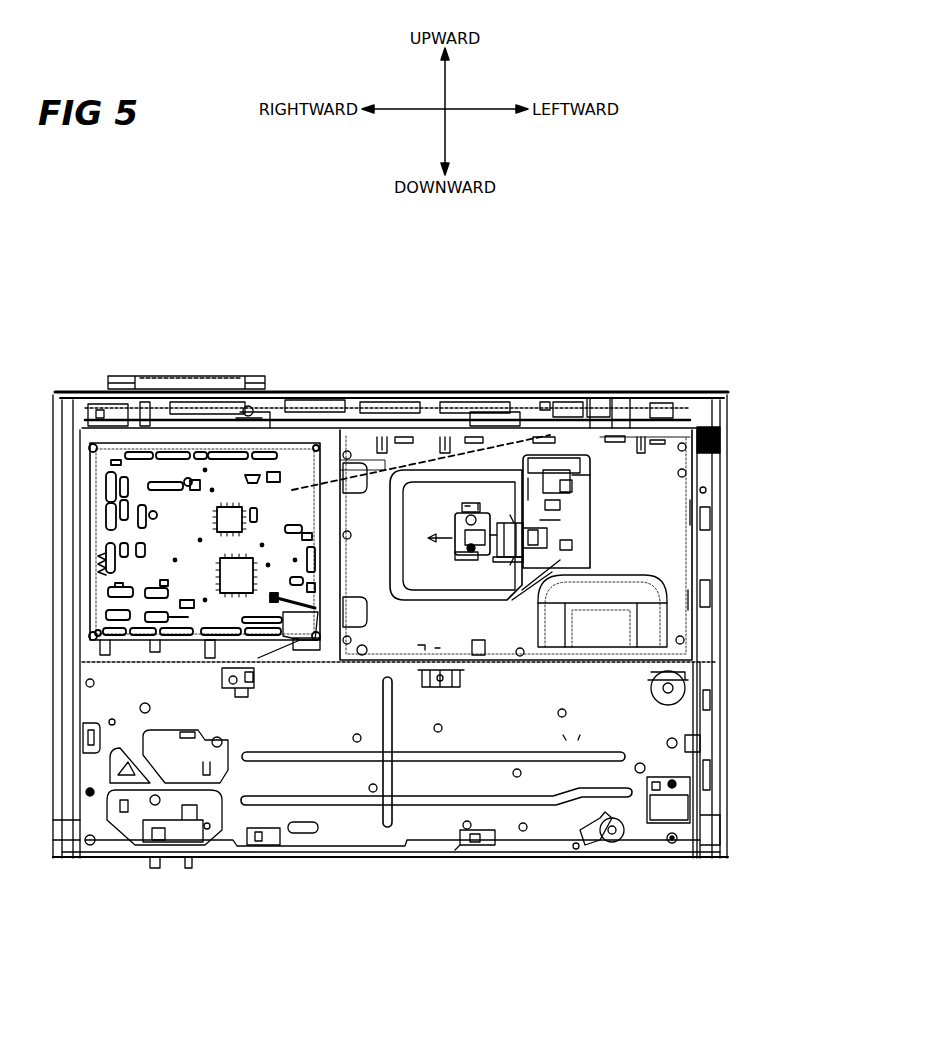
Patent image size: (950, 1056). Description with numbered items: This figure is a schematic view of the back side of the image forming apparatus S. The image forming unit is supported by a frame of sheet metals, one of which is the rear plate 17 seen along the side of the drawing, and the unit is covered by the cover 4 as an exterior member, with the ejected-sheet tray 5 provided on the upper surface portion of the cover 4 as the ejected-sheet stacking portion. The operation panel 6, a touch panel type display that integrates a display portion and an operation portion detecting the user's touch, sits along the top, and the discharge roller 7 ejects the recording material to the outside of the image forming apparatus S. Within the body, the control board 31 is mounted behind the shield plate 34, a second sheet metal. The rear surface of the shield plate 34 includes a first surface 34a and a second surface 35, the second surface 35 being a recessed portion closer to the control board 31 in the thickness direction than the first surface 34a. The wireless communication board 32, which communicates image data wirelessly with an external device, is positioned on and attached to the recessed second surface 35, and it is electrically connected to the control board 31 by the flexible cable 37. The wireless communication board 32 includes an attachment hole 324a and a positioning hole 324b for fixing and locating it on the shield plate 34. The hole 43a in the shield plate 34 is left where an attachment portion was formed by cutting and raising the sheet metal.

The cover 4 is at (598, 395).
The ejected-sheet tray 5 is at (375, 470).
The operation panel 6 is at (157, 372).
The discharge roller 7 is at (270, 428).
The rear plate 17 is at (674, 400).
The control board 31 is at (548, 512).
The wireless communication board 32 is at (447, 518).
The shield plate 34 is at (618, 513).
The first surface 34a is at (657, 503).
The second surface 35 is at (420, 503).
The flexible cable 37 is at (531, 535).
The hole 43a is at (470, 505).
The attachment hole 324a is at (498, 562).
The positioning hole 324b is at (472, 560).
The image forming apparatus S is at (310, 392).